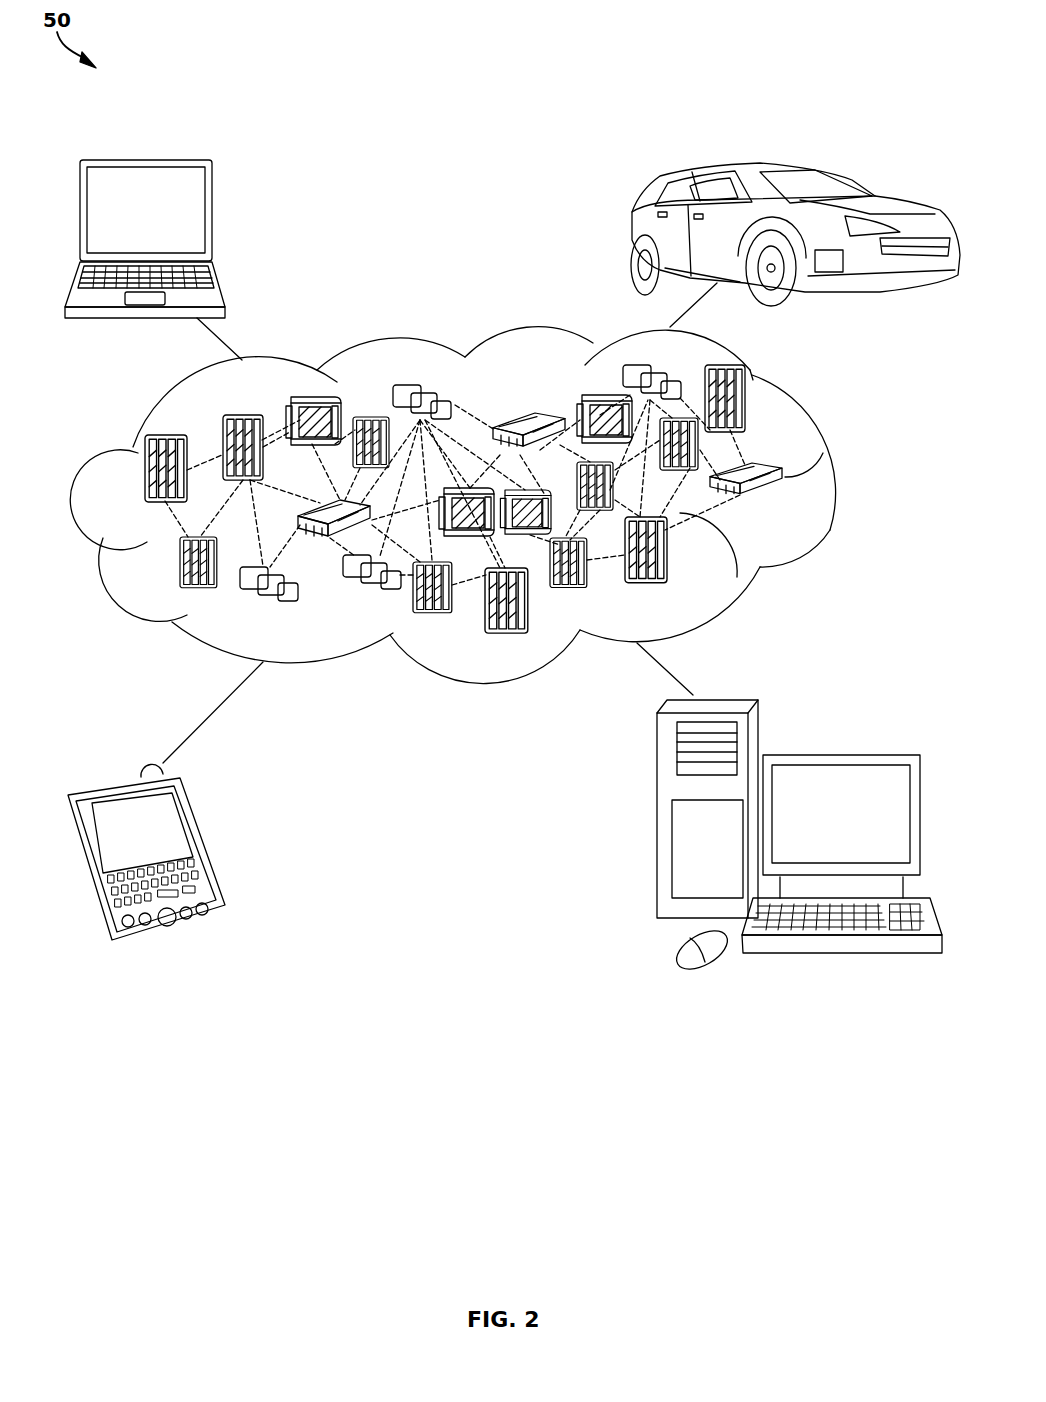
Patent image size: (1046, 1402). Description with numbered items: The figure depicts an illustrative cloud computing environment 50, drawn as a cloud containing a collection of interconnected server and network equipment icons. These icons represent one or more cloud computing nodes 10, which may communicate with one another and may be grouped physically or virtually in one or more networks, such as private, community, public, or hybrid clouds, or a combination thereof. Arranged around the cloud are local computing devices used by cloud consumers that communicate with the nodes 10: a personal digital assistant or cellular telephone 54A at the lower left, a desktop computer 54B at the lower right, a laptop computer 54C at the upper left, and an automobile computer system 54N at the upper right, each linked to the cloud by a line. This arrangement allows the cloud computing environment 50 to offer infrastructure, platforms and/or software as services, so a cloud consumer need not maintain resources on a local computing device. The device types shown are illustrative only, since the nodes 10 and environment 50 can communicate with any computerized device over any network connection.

The cloud computing environment 50 is at (843, 478).
The cloud computing node 10 is at (790, 510).
The personal digital assistant or cellular telephone 54A is at (200, 842).
The desktop computer 54B is at (837, 754).
The laptop computer 54C is at (213, 217).
The automobile computer system 54N is at (632, 236).